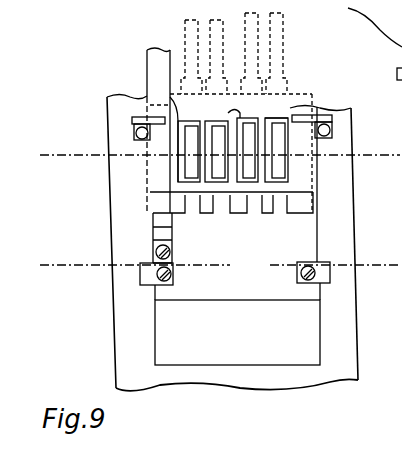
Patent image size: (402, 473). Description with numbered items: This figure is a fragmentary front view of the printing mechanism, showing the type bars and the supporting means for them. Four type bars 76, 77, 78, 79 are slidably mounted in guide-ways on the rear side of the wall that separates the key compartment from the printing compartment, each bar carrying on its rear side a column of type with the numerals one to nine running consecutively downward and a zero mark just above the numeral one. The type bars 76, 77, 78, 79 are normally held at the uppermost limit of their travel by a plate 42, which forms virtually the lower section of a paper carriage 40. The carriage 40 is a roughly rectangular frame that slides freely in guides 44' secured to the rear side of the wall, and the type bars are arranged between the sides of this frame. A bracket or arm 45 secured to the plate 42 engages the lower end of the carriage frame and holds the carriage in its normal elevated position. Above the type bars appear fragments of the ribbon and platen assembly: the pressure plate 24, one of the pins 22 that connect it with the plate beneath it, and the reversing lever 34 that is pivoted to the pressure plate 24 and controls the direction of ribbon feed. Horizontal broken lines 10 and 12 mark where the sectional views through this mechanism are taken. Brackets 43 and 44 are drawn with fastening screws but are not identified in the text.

The section line 10— 10 is at (207, 154).
The section line 12— 12 is at (211, 264).
The pin 22 is at (398, 59).
The pressure plate 24 is at (375, 23).
The reversing lever 34 is at (393, 16).
The paper carriage 40 is at (152, 63).
The plate 42 is at (237, 314).
The left mounting bracket with screw 43 is at (144, 285).
The right mounting bracket with screw 44 is at (324, 299).
The guides 44' is at (206, 144).
The bracket or arm 45 is at (172, 242).
The type bar 76 is at (277, 122).
The type bar 77 is at (252, 178).
The type bar 78 is at (224, 119).
The type bar 79 is at (186, 155).